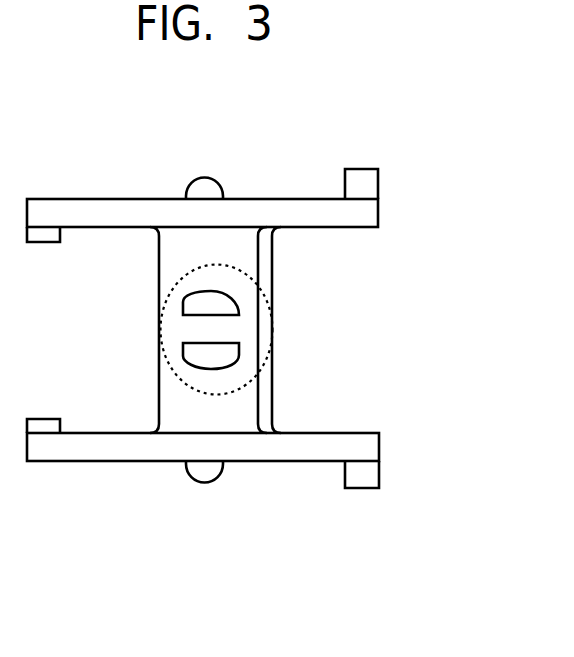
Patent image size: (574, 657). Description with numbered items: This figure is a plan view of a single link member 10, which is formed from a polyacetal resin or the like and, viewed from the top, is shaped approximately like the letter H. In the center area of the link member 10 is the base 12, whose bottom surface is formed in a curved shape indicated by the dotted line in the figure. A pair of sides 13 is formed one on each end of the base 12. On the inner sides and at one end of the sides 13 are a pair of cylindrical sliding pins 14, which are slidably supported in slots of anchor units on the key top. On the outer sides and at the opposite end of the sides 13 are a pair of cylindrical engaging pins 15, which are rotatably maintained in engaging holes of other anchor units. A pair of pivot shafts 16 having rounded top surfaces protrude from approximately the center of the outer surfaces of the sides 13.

The link member 10 is at (220, 335).
The base 12 is at (267, 277).
The sides 13 is at (93, 212).
The sliding pins 14 is at (43, 237).
The engaging pins 15 is at (361, 182).
The pivot shafts 16 is at (203, 189).